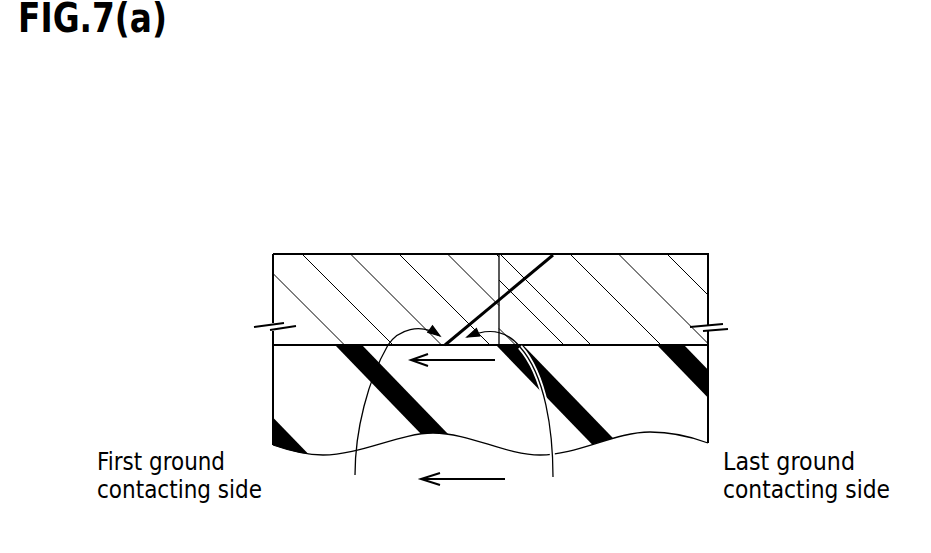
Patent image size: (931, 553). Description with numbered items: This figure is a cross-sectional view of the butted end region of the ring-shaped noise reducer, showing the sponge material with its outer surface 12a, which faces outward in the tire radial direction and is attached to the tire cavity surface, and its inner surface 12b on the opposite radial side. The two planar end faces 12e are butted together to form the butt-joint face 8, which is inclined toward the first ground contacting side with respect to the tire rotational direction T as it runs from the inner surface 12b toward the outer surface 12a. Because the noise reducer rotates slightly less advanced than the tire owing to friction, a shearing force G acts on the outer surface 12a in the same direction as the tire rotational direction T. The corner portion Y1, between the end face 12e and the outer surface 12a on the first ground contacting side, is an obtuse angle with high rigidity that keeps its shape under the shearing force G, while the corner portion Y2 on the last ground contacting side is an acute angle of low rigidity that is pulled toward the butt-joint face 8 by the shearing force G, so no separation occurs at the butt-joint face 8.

The outer surface 12a is at (325, 345).
The inner surface 12b is at (324, 254).
The end face 12e is at (444, 341).
The butt-joint face 8 is at (490, 307).
The corner portion Y1 is at (389, 419).
The corner portion Y2 is at (521, 421).
The shearing force G is at (453, 373).
The tire rotational direction T is at (463, 492).